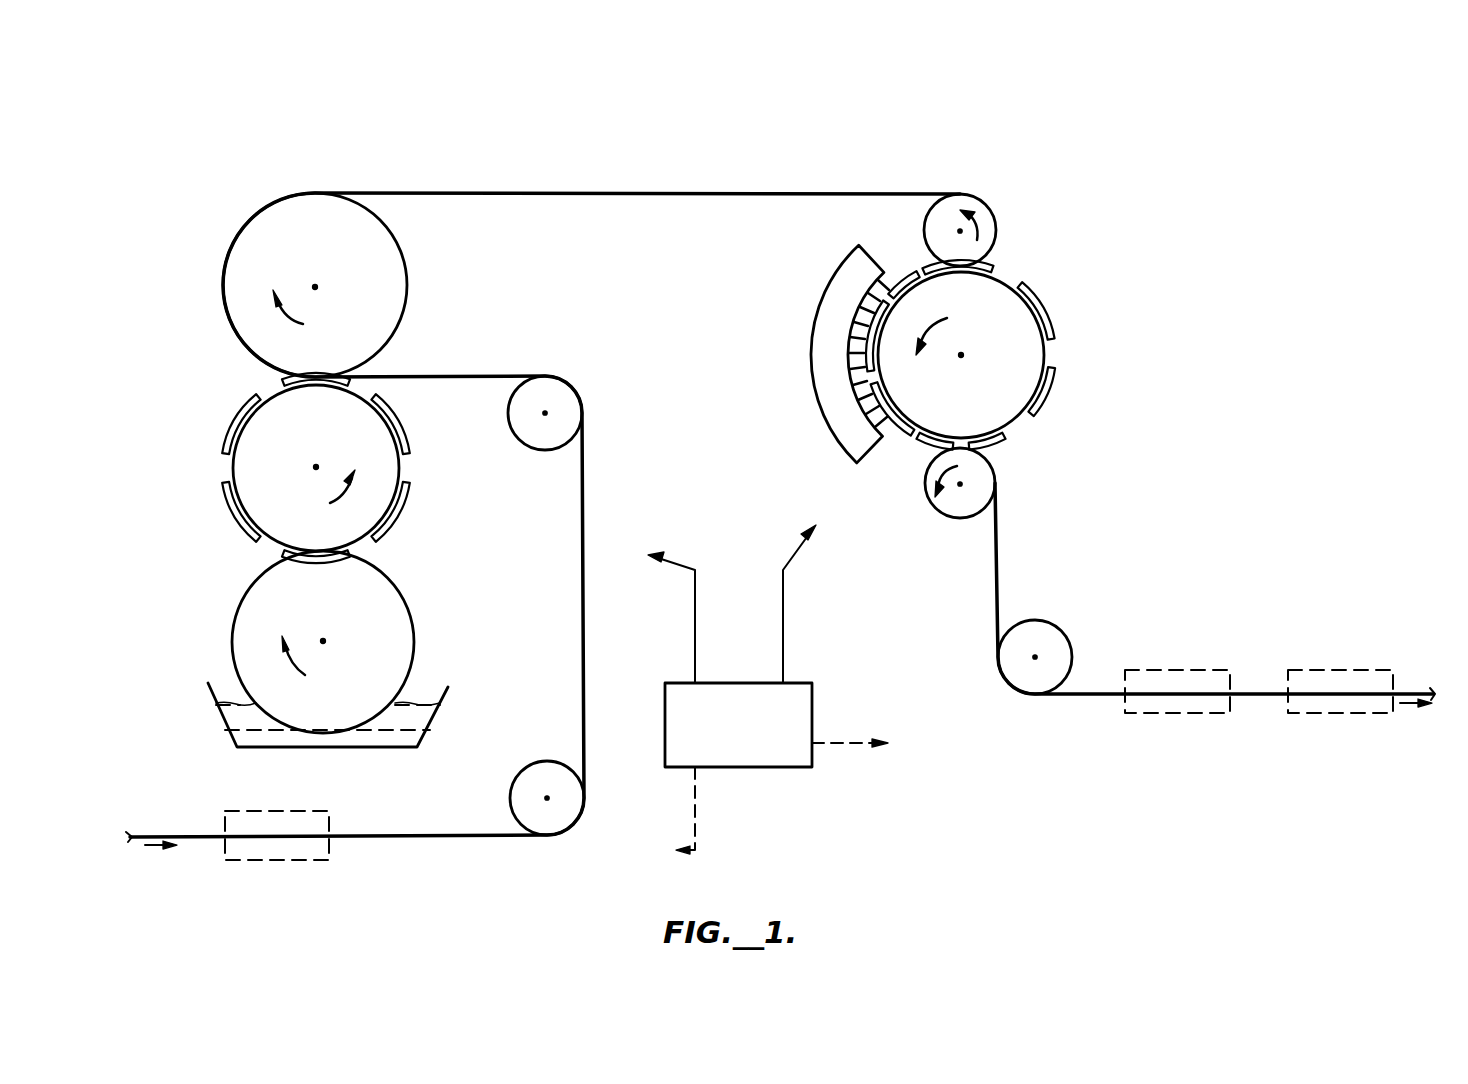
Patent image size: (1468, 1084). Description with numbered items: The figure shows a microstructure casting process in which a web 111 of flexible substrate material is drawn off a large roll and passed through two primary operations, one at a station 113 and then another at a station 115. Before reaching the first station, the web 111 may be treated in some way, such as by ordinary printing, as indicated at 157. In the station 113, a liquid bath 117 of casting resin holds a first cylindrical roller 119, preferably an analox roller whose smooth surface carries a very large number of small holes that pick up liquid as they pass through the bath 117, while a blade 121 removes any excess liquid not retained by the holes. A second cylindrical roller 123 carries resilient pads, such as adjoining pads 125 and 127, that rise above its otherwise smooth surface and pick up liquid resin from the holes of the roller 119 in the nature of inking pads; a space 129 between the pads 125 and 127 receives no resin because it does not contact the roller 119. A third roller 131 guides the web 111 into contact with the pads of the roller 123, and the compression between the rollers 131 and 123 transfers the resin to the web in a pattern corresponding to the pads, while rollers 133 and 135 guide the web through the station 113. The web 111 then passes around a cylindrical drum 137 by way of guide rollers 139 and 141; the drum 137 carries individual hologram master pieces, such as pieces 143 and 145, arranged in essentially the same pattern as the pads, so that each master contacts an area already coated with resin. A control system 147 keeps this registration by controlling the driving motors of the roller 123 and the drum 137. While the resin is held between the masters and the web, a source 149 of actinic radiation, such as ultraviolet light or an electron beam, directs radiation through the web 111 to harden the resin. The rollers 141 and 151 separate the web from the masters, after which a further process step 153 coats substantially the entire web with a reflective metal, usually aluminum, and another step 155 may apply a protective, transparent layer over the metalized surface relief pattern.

The web 111 is at (165, 835).
The station 113 is at (318, 162).
The station 115 is at (968, 156).
The liquid bath 117 is at (420, 700).
The first cylindrical roller 119 is at (392, 606).
The blade 121 is at (238, 678).
The second cylindrical roller 123 is at (390, 467).
The pad 125 is at (283, 545).
The pad 127 is at (230, 497).
The space 129 is at (262, 530).
The third roller 131 is at (394, 293).
The roller 133 is at (540, 775).
The roller 135 is at (545, 437).
The cylindrical drum 137 is at (985, 304).
The guide roller 139 is at (935, 226).
The guide roller 141 is at (945, 505).
The hologram master piece 143 is at (1042, 312).
The hologram master piece 145 is at (1045, 389).
The control system 147 is at (797, 683).
The source of actinic radiation 149 is at (828, 385).
The roller 151 is at (1030, 638).
The further process step 153 is at (1196, 680).
The process step 155 is at (1320, 676).
The treatment step 157 is at (296, 820).